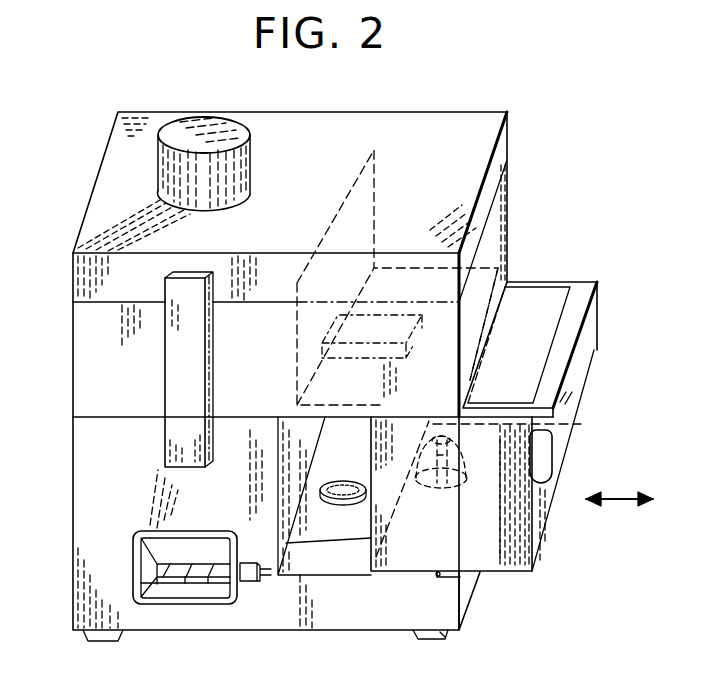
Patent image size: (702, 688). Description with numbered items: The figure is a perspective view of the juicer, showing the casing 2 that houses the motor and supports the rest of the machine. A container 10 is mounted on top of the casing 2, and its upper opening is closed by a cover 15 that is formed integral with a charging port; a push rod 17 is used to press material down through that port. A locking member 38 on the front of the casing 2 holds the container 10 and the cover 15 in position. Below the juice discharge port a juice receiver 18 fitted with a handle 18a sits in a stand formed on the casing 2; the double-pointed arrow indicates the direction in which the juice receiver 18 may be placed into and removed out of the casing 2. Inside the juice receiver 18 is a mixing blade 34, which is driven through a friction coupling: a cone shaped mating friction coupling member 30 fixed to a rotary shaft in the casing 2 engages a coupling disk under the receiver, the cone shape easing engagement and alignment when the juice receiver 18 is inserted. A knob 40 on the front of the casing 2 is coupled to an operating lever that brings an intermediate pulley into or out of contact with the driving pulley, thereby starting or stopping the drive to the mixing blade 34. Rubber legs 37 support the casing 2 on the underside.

The casing 2 is at (86, 453).
The container 10 is at (499, 211).
The cover 15 is at (466, 132).
The push rod 17 is at (194, 130).
The juice receiver 18 is at (520, 524).
The handle 18a is at (590, 312).
The cone shaped mating friction coupling member 30 is at (344, 506).
The mixing blade 34 is at (452, 490).
The rubber leg 37 is at (446, 636).
The locking member 38 is at (198, 342).
The knob 40 is at (254, 580).